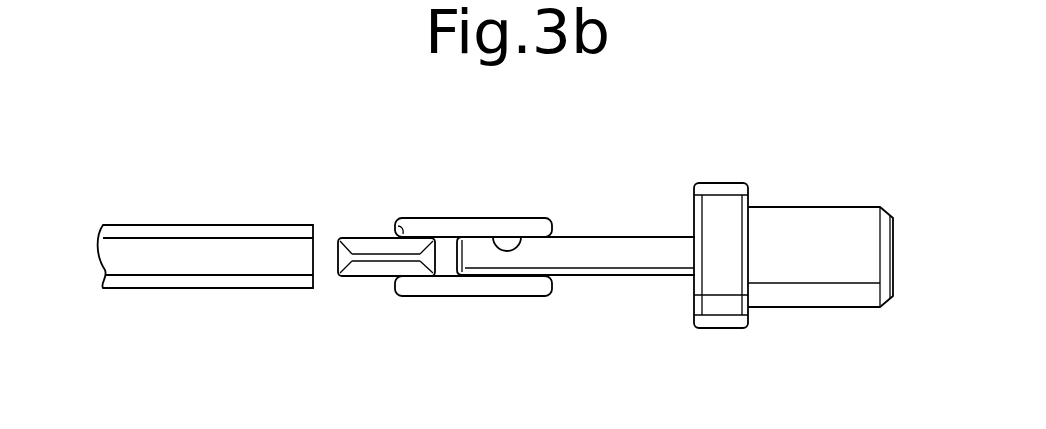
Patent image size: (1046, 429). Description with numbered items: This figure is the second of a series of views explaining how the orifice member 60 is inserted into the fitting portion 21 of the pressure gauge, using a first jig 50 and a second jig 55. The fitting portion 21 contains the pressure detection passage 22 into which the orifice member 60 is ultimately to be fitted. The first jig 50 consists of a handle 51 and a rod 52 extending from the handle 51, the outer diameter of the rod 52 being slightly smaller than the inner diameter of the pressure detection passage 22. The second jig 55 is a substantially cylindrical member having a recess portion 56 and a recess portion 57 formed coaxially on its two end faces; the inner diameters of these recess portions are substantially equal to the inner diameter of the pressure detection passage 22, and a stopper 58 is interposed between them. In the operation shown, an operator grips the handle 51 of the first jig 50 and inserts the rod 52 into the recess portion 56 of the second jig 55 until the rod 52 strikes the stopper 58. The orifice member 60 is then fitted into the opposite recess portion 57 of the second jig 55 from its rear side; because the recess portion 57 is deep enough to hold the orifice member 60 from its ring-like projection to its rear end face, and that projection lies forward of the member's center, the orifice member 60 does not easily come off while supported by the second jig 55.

The fitting portion 21 is at (181, 210).
The pressure detection passage 22 is at (247, 240).
The first jig 50 is at (728, 166).
The handle 51 is at (838, 230).
The rod 52 is at (634, 248).
The second jig 55 is at (479, 197).
The recess portion 56 is at (516, 242).
The recess portion 57 is at (423, 243).
The stopper 58 is at (445, 262).
The orifice member 60 is at (355, 247).